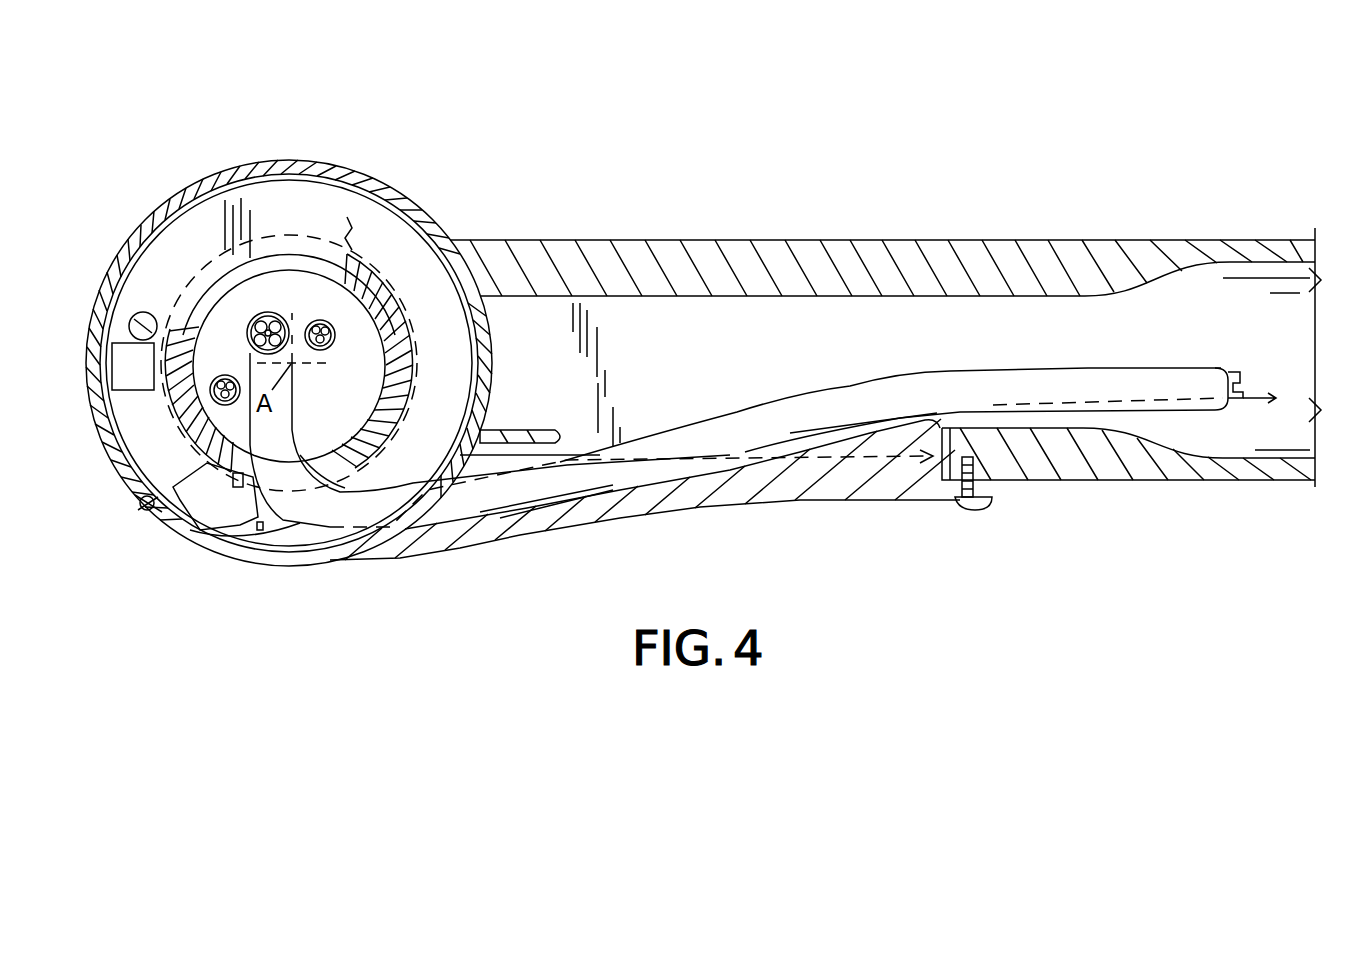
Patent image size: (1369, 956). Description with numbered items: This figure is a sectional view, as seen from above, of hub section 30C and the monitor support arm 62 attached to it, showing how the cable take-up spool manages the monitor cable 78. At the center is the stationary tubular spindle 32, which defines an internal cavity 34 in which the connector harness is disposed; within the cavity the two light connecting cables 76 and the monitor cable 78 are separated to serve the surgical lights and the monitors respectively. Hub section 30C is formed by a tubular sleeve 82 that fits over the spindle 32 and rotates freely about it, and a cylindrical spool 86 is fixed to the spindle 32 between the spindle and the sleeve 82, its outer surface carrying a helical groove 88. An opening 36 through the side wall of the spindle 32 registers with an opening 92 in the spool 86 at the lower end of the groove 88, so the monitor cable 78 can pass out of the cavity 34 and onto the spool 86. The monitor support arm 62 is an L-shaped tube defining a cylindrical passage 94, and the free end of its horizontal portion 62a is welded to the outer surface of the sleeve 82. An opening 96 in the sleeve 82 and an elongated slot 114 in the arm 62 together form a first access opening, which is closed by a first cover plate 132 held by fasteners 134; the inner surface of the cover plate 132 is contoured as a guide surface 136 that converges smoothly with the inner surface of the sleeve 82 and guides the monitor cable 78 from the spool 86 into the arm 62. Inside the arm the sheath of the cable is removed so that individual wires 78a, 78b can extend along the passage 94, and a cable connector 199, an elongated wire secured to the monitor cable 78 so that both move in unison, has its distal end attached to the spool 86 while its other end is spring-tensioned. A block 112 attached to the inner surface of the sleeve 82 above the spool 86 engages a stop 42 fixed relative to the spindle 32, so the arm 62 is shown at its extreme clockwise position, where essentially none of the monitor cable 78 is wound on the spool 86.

The hub section 30C is at (263, 146).
The cylindrical spool 86 is at (205, 200).
The tubular sleeve 82 is at (365, 200).
The helical groove 88 is at (440, 393).
The central spindle 32 is at (380, 300).
The internal cavity 34 is at (318, 290).
The light connecting cables 76 is at (330, 310).
The monitor cable 78 is at (268, 320).
The cable connector 199 is at (300, 540).
The opening 36 is at (320, 455).
The stop 42 is at (138, 320).
The block 112 is at (125, 380).
The opening 96 is at (175, 520).
The fasteners 134 is at (148, 505).
The opening 92 is at (282, 530).
The first cover plate 132 is at (606, 536).
The guide surface 136 is at (453, 512).
The monitor support arm 62 is at (1185, 232).
The horizontal portion 62a is at (1005, 245).
The elongated slot 114 is at (940, 470).
The cylindrical passage 94 is at (1303, 325).
The individual wire 78a is at (1234, 376).
The individual wire 78b is at (1241, 386).